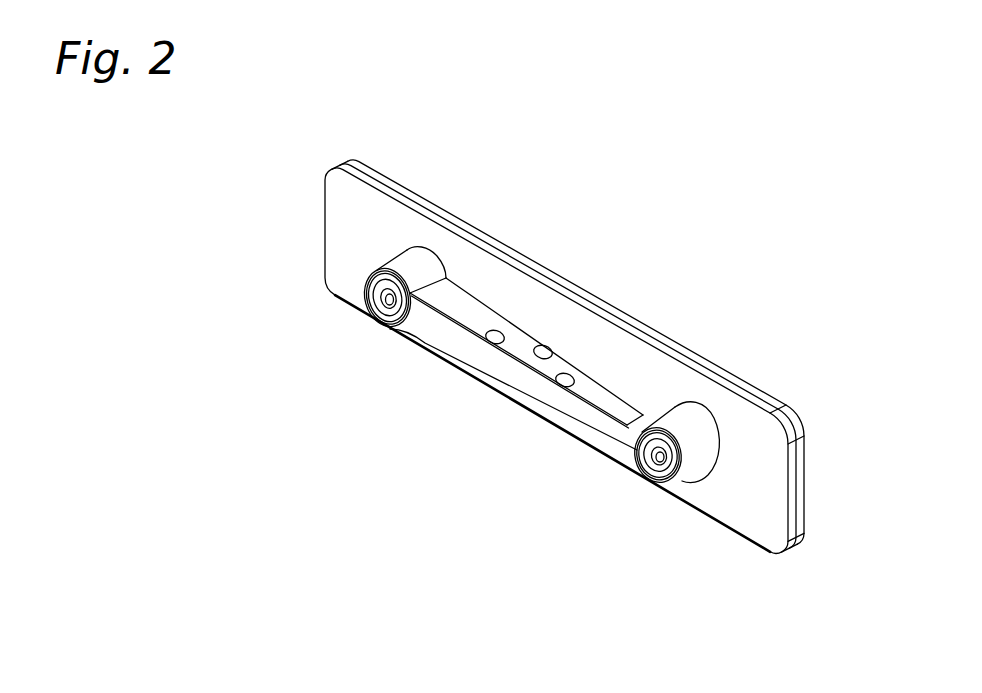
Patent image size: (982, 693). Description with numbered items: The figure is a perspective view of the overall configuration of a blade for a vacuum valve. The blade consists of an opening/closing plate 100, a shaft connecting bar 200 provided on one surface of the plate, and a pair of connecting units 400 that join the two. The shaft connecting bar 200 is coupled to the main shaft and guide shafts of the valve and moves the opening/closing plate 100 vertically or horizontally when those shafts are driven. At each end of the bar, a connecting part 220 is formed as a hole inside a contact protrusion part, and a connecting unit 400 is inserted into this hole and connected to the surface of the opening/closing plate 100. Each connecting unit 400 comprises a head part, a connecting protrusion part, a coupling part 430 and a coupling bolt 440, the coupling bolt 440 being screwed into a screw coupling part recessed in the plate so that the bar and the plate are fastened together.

The opening/closing plate 100 is at (575, 316).
The shaft connecting bar 200 is at (455, 343).
The connecting unit 400 is at (380, 272).
The coupling bolt 440 is at (368, 297).
The coupling part 430 is at (392, 301).
The connecting part 220 is at (368, 282).